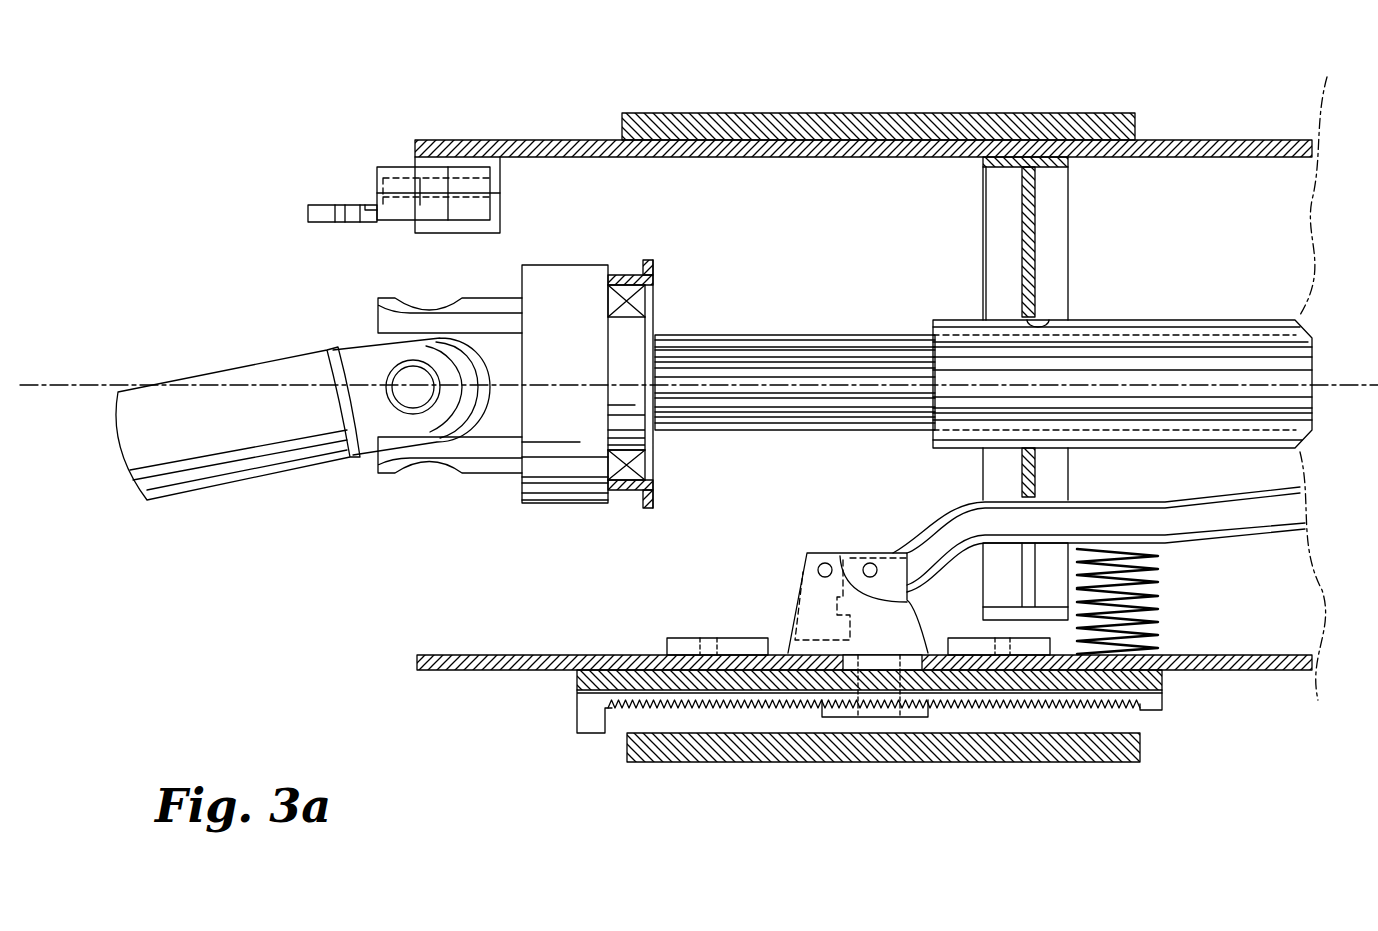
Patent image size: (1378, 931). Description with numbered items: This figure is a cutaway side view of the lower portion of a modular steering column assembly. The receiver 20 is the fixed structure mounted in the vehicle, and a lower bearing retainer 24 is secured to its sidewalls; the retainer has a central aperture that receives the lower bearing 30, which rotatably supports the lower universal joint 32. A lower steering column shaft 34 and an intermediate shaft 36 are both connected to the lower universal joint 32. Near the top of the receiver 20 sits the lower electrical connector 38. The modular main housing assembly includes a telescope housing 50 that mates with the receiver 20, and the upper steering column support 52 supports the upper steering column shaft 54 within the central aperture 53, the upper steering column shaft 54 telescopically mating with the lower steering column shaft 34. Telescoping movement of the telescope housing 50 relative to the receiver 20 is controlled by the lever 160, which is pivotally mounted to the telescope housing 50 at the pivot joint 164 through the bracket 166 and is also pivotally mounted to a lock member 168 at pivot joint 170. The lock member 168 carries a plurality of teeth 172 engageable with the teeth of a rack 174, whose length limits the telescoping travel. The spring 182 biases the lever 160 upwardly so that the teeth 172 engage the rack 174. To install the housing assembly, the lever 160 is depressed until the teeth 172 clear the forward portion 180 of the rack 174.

The receiver 20 is at (742, 113).
The telescope housing 50 is at (1185, 140).
The lower electrical connector 38 is at (390, 157).
The intermediate shaft 36 is at (185, 378).
The lower universal joint 32 is at (497, 475).
The lower bearing 30 is at (617, 467).
The lower bearing retainer 24 is at (633, 493).
The lower steering column shaft 34 is at (775, 335).
The upper steering column shaft 54 is at (1175, 320).
The central aperture 53 is at (1040, 322).
The upper steering column support 52 is at (1035, 178).
The lever 160 is at (1250, 540).
The bracket 166 is at (800, 590).
The lock member 168 is at (908, 597).
The pivot joint 164 is at (822, 563).
The pivot joint 170 is at (870, 563).
The spring 182 is at (1158, 600).
The rack 174 is at (577, 718).
The forward portion 180 is at (1163, 702).
The teeth 172 is at (903, 700).